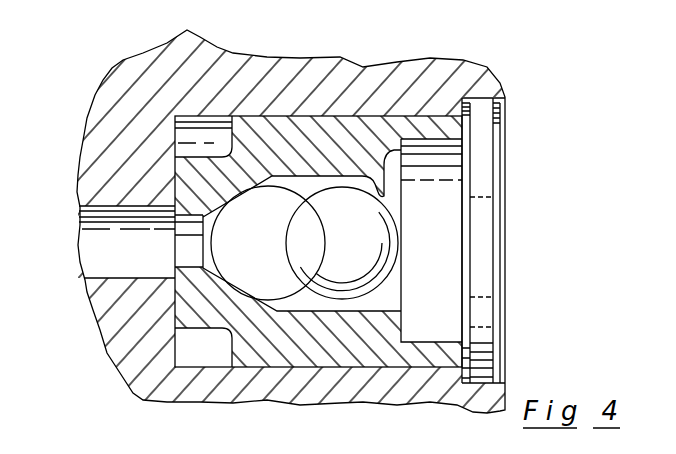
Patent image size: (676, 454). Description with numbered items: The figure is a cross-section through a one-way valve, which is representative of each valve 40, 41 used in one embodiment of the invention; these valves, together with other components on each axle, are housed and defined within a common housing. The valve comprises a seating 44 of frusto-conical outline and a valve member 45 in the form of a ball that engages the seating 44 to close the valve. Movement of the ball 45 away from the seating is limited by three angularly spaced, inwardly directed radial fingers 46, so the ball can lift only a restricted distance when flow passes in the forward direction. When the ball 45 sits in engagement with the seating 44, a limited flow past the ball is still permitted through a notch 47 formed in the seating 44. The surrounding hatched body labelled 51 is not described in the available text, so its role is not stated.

The valve 40 is at (324, 76).
The valve 41 is at (291, 208).
The seating 44 is at (213, 278).
The valve member 45 is at (367, 238).
The radial fingers 46 is at (382, 194).
The notch 47 is at (203, 181).
The housing block 51 is at (170, 99).